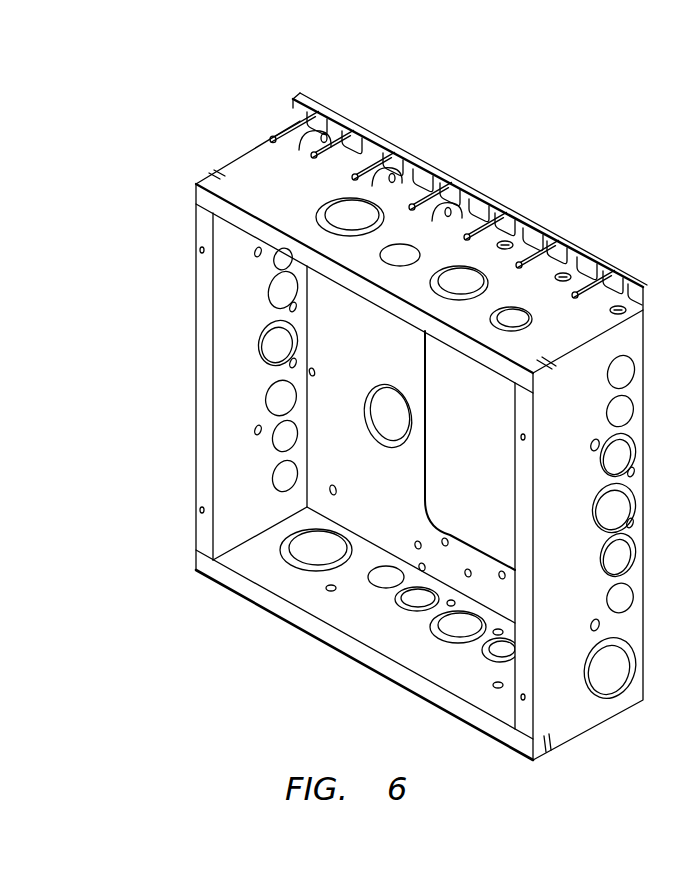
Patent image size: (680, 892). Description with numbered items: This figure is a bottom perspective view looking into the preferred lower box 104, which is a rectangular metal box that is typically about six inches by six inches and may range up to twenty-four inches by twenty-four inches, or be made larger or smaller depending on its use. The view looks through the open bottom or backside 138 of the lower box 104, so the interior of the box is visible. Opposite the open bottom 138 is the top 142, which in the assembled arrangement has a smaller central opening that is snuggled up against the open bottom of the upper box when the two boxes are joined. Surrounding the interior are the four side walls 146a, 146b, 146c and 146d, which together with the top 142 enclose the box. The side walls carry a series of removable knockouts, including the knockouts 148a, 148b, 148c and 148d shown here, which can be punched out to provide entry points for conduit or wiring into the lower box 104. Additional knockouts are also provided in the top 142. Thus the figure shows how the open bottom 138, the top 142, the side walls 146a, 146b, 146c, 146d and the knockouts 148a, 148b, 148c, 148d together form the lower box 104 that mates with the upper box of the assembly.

The lower box 104 is at (202, 113).
The open bottom 138 is at (238, 412).
The top 142 is at (393, 504).
The side wall 146a is at (242, 167).
The side wall 146b is at (572, 720).
The side wall 146c is at (387, 632).
The side wall 146d is at (232, 493).
The knockout 148a is at (355, 215).
The knockout 148b is at (402, 254).
The knockout 148c is at (463, 280).
The knockout 148d is at (513, 313).